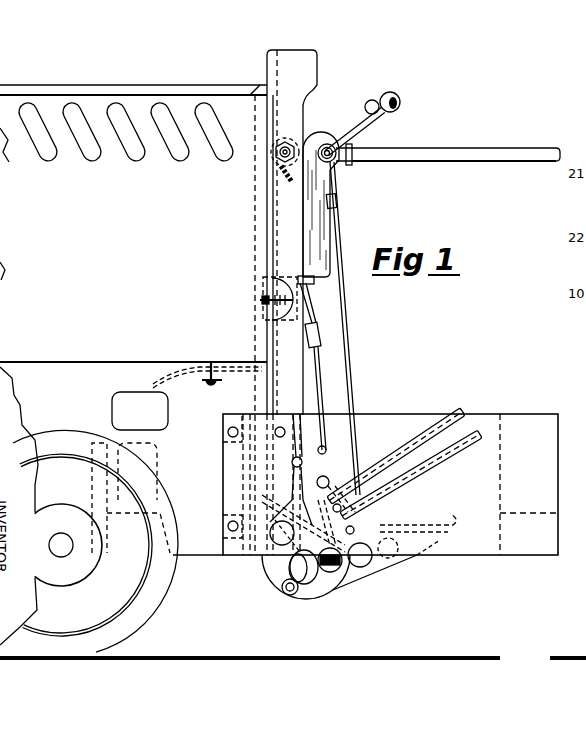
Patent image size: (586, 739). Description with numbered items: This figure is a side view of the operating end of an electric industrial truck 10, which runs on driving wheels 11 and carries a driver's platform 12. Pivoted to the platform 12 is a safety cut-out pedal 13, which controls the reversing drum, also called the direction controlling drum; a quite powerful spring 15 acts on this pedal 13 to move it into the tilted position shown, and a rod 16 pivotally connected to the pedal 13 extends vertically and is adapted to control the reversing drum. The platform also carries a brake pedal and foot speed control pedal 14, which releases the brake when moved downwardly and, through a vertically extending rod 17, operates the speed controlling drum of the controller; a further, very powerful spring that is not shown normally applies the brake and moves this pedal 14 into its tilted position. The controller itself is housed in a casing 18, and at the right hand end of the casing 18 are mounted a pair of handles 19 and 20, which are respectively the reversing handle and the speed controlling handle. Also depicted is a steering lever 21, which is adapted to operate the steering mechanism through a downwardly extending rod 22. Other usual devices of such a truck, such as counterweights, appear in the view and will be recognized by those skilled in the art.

The electric industrial truck 10 is at (102, 315).
The driving wheels 11 is at (140, 606).
The driver's platform 12 is at (550, 465).
The safety cut-out pedal 13 is at (468, 432).
The brake pedal and foot speed control pedal 14 is at (412, 433).
The spring 15 is at (343, 558).
The rod 16 is at (297, 465).
The rod 17 is at (317, 355).
The casing 18 is at (320, 225).
The reversing handle 19 is at (402, 103).
The speed controlling handle 20 is at (378, 99).
The steering lever 21 is at (470, 147).
The rod 22 is at (340, 289).